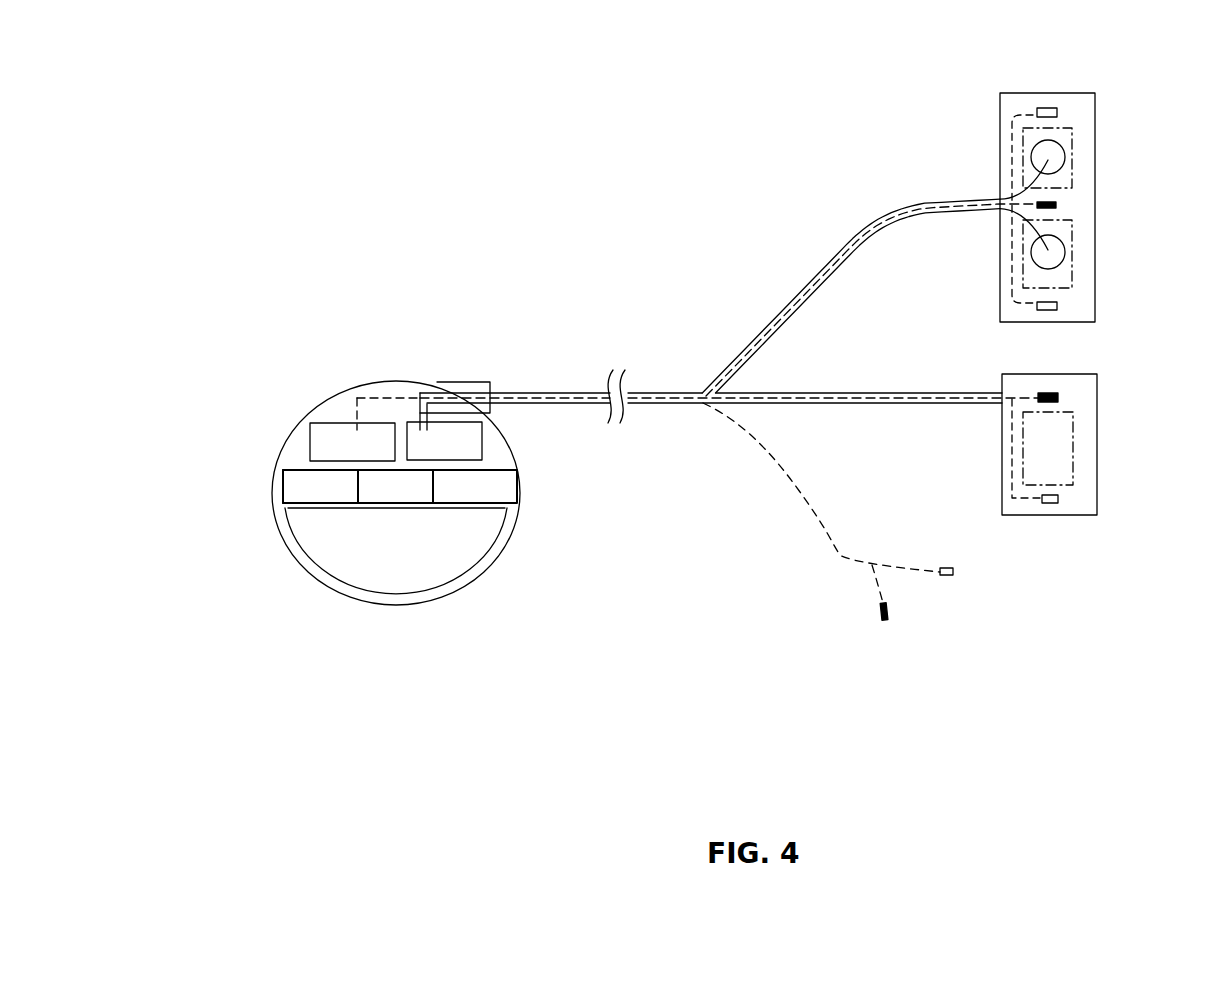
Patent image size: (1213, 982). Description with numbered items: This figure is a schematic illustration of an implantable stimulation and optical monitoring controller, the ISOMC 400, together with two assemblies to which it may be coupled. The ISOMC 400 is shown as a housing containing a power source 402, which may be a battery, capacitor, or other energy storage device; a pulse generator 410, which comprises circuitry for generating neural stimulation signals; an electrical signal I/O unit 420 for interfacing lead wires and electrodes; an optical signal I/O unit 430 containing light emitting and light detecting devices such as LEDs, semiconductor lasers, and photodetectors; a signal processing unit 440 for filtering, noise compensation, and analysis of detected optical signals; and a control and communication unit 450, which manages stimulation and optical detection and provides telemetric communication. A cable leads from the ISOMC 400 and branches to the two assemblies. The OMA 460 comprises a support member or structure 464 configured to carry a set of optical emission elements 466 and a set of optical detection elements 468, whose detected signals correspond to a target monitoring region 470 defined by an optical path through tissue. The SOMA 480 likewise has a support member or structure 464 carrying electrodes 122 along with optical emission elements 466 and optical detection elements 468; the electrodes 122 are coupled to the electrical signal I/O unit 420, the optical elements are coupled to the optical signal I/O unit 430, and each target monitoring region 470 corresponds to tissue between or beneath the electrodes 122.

The ISOMC 400 is at (397, 549).
The power source 402 is at (497, 523).
The pulse generator 410 is at (507, 487).
The electrical signal I/O unit 420 is at (465, 435).
The optical signal I/O unit 430 is at (317, 437).
The signal processing unit 440 is at (372, 497).
The control and communication unit 450 is at (323, 488).
The OMA 460 is at (1133, 498).
The support member or structure 464 is at (1000, 257).
The optical emission element 466 is at (1048, 108).
The optical detection element 468 is at (1057, 202).
The target monitoring region 470 is at (1068, 135).
The SOMA 480 is at (1090, 69).
The electrical contacts or electrodes 122 is at (1063, 143).